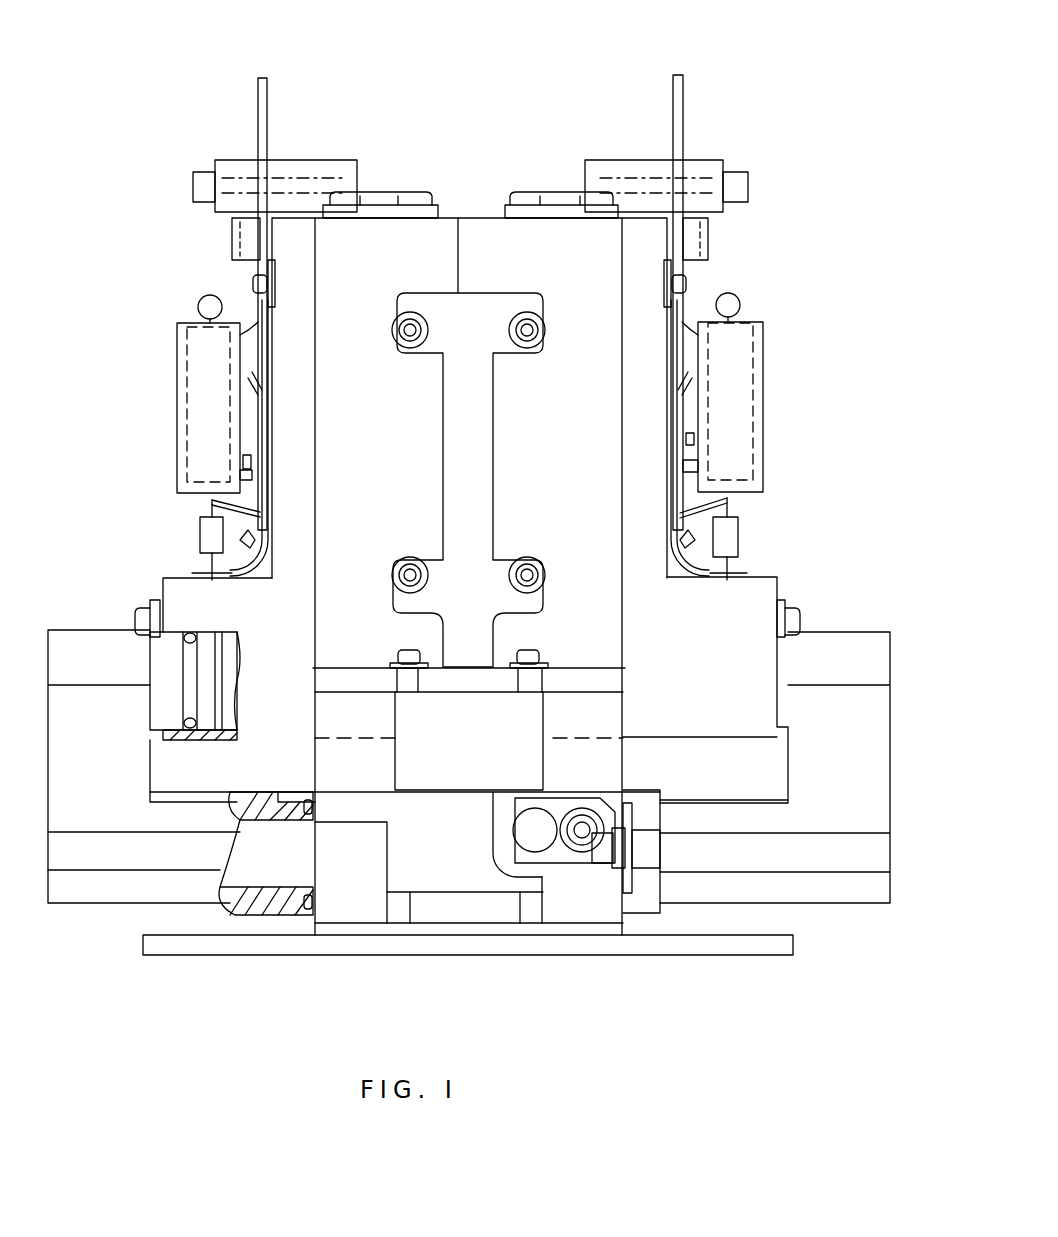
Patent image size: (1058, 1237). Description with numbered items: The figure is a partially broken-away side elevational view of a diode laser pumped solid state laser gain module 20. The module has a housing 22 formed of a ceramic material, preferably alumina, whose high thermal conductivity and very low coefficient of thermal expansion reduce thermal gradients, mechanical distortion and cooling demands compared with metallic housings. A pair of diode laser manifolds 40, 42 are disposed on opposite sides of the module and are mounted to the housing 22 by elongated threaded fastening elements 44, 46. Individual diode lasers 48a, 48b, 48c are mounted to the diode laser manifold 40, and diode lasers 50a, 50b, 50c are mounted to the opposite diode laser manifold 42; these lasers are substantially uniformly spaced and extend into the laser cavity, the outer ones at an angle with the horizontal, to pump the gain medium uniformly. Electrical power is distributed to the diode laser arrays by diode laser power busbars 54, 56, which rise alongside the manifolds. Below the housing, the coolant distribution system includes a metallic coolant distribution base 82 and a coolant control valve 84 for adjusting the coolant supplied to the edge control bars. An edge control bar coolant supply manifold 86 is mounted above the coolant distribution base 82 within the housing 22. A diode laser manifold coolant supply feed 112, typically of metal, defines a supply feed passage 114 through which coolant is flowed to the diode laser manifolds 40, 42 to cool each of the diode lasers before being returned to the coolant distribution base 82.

The laser gain module 20 is at (544, 55).
The housing 22 is at (622, 467).
The diode laser manifold 40 is at (173, 578).
The diode laser manifold 42 is at (772, 577).
The elongated threaded fastening element 44 is at (137, 618).
The elongated threaded fastening element 46 is at (253, 283).
The diode laser 48a is at (683, 380).
The diode laser 48b is at (698, 463).
The diode laser 48c is at (690, 527).
The diode laser 50a is at (257, 378).
The diode laser 50b is at (248, 467).
The diode laser 50c is at (260, 527).
The diode laser power busbar 54 is at (683, 112).
The diode laser power busbar 56 is at (258, 110).
The coolant distribution base 82 is at (543, 935).
The coolant control valve 84 is at (556, 812).
The edge control bar coolant supply manifold 86 is at (493, 400).
The diode laser manifold coolant supply feed 112 is at (70, 632).
The supply feed passage 114 is at (163, 710).